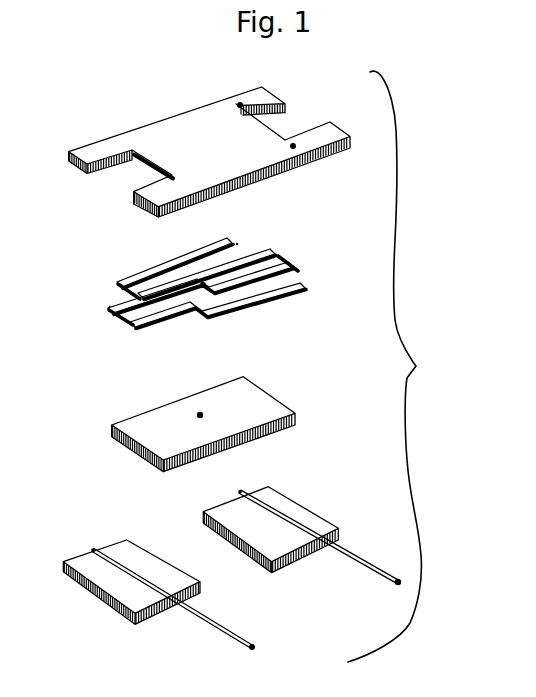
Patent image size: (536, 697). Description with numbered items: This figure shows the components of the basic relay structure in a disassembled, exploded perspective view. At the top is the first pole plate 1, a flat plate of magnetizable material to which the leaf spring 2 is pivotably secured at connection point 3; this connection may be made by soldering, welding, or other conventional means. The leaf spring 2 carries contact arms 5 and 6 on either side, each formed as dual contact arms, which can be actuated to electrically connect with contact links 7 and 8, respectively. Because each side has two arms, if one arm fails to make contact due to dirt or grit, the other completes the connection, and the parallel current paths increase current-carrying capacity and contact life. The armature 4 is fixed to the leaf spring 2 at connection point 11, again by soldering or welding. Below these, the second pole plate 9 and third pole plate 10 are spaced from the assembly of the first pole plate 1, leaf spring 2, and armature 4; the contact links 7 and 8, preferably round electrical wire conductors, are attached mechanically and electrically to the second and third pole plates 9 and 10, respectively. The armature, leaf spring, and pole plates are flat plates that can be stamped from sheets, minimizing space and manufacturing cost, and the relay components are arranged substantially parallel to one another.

The first pole plate 1 is at (184, 126).
The leaf spring 2 is at (238, 288).
The connection point 3 is at (294, 145).
The armature 4 is at (263, 408).
The contact arm 5 is at (131, 322).
The contact arm 6 is at (283, 273).
The contact link 7 is at (115, 560).
The contact link 8 is at (295, 520).
The second pole plate 9 is at (123, 598).
The third pole plate 10 is at (290, 562).
The connection point 11 is at (200, 415).